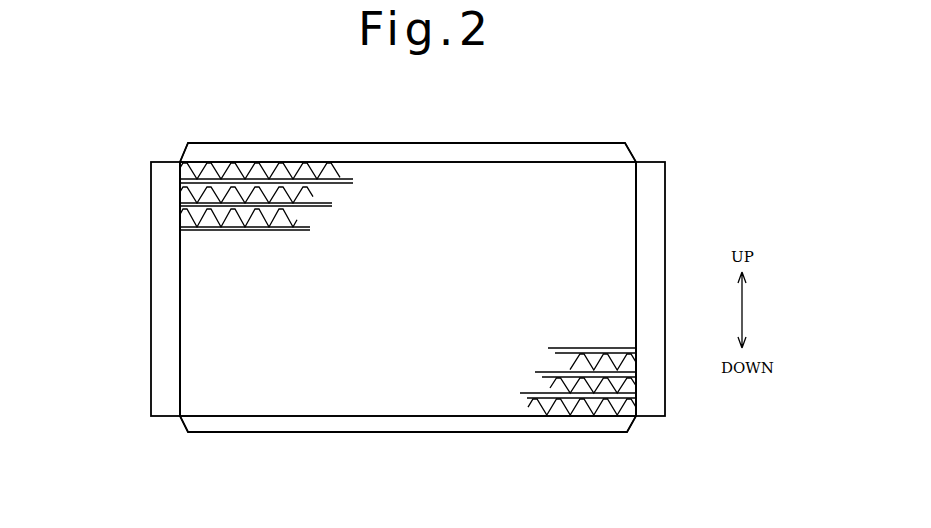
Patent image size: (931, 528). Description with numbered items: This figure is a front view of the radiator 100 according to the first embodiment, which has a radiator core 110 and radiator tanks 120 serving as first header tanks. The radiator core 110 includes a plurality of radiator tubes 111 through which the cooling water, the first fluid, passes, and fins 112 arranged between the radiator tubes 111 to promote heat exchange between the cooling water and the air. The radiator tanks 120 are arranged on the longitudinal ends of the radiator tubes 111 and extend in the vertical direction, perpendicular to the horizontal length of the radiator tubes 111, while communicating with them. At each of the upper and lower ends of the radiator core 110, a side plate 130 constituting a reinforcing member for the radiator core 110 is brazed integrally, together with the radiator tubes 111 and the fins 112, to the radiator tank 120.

The radiator 100 is at (575, 138).
The radiator core 110 is at (485, 197).
The radiator tube 111 is at (268, 197).
The fin 112 is at (199, 172).
The radiator tank 120 is at (160, 212).
The side plate 130 is at (377, 152).